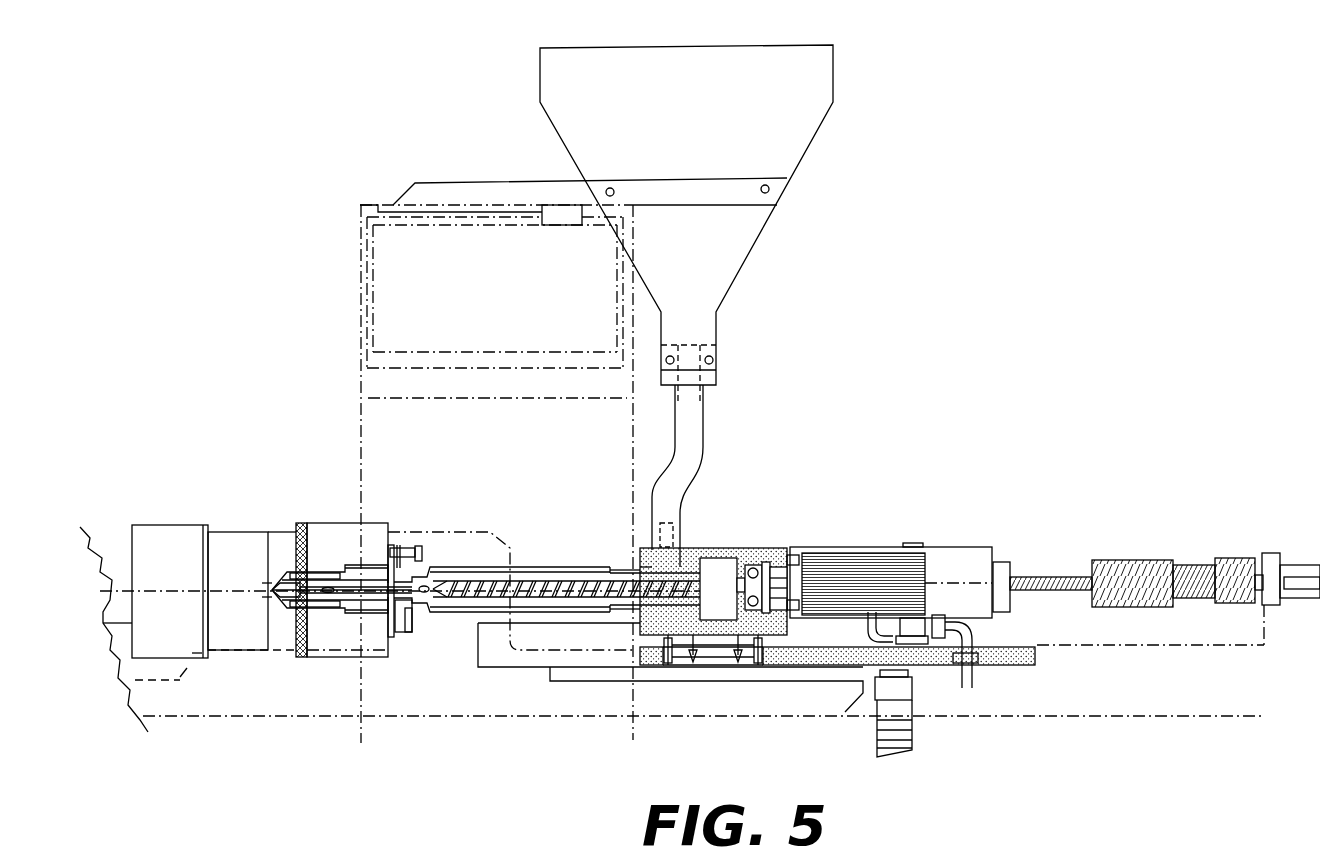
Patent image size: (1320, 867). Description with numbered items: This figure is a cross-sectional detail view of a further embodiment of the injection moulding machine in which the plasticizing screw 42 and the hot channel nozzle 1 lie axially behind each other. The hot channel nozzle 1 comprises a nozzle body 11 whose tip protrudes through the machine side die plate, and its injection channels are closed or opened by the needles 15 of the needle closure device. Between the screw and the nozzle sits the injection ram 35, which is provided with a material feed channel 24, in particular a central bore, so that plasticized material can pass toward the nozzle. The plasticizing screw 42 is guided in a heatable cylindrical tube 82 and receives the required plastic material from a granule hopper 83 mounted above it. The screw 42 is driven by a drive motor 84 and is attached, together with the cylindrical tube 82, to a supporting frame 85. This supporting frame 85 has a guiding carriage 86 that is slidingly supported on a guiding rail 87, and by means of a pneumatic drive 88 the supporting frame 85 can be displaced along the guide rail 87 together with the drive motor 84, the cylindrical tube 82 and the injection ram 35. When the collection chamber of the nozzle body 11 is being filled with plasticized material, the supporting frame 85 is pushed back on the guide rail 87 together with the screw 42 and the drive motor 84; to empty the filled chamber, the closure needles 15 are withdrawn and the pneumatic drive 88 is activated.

The hot channel nozzle 1 is at (382, 610).
The nozzle body 11 is at (293, 580).
The needles 15 is at (310, 604).
The material feed channel 24 is at (327, 588).
The injection ram 35 is at (424, 603).
The plasticizing screw 42 is at (597, 580).
The cylindrical tube 82 is at (492, 565).
The granule hopper 83 is at (720, 245).
The drive motor 84 is at (865, 572).
The supporting frame 85 is at (748, 548).
The guiding carriage 86 is at (713, 640).
The guiding rail 87 is at (1000, 660).
The pneumatic drive 88 is at (1132, 562).